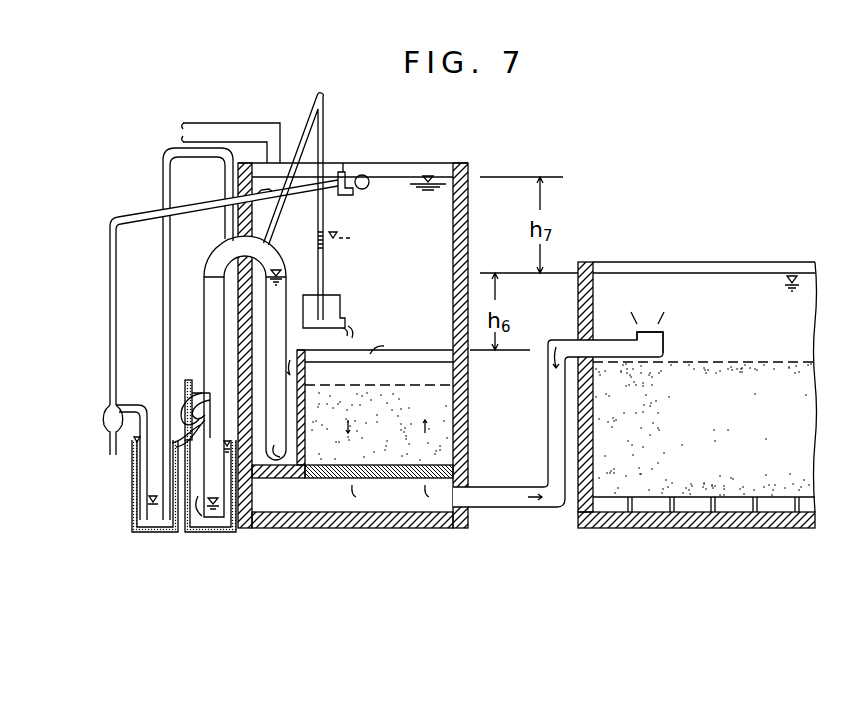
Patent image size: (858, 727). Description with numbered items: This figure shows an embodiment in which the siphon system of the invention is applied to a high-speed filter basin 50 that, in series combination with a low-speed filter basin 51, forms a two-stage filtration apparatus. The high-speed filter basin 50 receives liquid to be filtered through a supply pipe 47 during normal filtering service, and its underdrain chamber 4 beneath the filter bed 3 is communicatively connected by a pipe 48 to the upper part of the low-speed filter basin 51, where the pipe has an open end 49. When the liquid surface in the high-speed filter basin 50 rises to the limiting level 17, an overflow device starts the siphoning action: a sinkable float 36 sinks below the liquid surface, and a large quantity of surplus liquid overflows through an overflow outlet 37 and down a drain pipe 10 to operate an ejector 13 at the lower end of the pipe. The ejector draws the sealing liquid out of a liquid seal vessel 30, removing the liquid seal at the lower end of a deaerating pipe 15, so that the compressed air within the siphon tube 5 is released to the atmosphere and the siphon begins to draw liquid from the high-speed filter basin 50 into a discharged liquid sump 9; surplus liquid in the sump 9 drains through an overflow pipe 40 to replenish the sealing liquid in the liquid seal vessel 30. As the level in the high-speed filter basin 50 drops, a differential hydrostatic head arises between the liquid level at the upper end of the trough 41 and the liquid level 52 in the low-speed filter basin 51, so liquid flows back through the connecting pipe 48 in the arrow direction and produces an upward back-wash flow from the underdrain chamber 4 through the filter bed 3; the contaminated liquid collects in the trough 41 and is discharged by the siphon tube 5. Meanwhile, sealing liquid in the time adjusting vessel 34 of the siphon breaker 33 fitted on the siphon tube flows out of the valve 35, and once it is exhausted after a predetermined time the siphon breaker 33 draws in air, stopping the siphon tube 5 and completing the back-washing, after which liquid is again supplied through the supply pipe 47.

The filter bed 3 is at (440, 407).
The underdrain chamber 4 is at (314, 508).
The siphon tube 5 is at (288, 248).
The discharged liquid sump 9 is at (205, 532).
The drain pipe 10 is at (127, 217).
The ejector 13 is at (104, 411).
The deaerating pipe 15 is at (162, 306).
The limiting level 17 is at (402, 168).
The liquid seal vessel 30 is at (150, 532).
The siphon breaker 33 is at (324, 213).
The time adjusting vessel 34 is at (341, 303).
The valve 35 is at (350, 331).
The sinkable float 36 is at (369, 187).
The overflow outlet 37 is at (341, 164).
The overflow pipe 40 is at (174, 432).
The trough 41 is at (408, 351).
The supply pipe 47 is at (240, 123).
The connecting pipe 48 is at (503, 487).
The open end 49 is at (663, 335).
The high-speed filter basin 50 is at (469, 206).
The low-speed filter basin 51 is at (587, 262).
The liquid level 52 is at (775, 262).